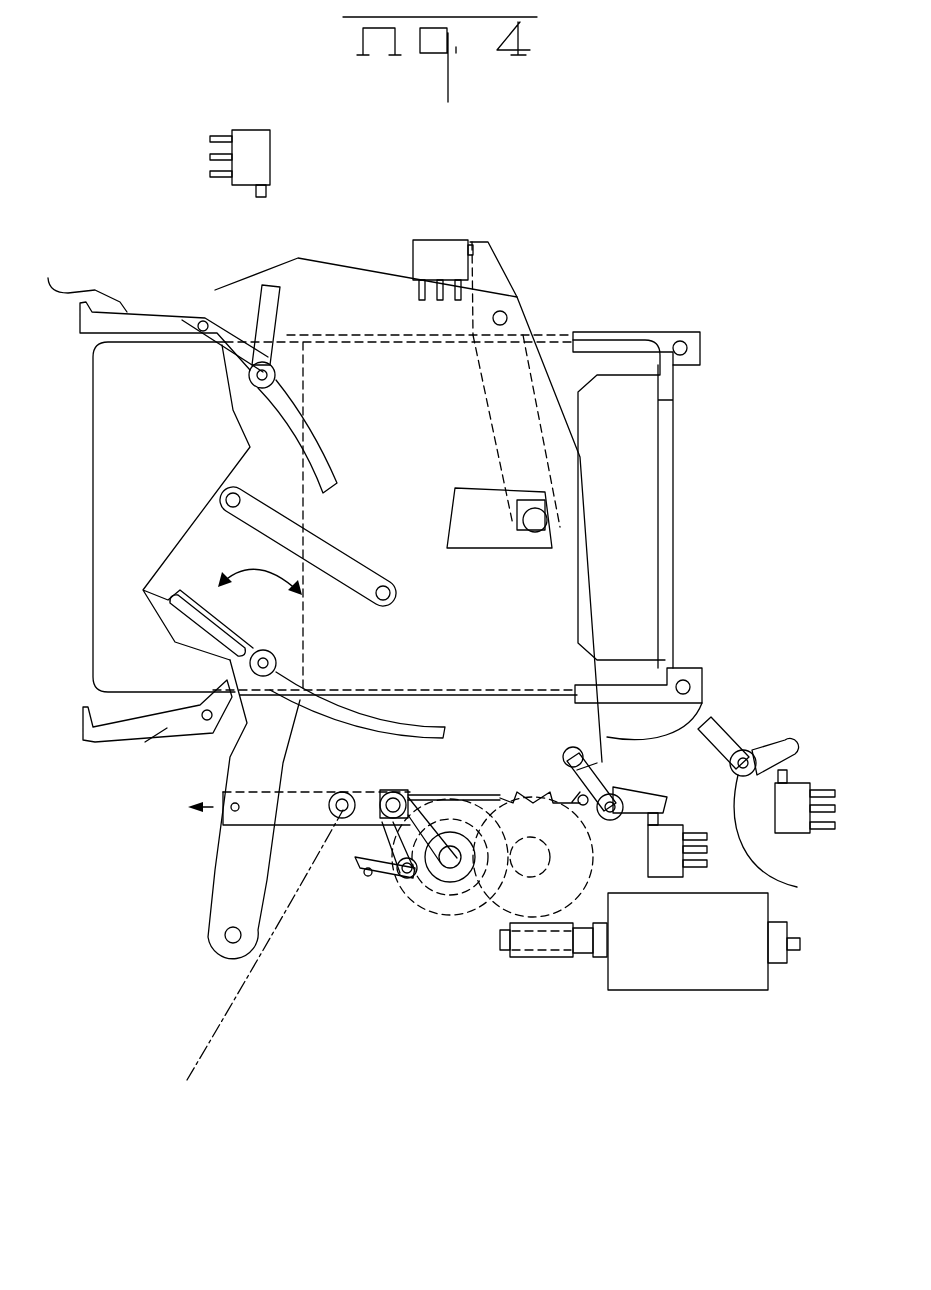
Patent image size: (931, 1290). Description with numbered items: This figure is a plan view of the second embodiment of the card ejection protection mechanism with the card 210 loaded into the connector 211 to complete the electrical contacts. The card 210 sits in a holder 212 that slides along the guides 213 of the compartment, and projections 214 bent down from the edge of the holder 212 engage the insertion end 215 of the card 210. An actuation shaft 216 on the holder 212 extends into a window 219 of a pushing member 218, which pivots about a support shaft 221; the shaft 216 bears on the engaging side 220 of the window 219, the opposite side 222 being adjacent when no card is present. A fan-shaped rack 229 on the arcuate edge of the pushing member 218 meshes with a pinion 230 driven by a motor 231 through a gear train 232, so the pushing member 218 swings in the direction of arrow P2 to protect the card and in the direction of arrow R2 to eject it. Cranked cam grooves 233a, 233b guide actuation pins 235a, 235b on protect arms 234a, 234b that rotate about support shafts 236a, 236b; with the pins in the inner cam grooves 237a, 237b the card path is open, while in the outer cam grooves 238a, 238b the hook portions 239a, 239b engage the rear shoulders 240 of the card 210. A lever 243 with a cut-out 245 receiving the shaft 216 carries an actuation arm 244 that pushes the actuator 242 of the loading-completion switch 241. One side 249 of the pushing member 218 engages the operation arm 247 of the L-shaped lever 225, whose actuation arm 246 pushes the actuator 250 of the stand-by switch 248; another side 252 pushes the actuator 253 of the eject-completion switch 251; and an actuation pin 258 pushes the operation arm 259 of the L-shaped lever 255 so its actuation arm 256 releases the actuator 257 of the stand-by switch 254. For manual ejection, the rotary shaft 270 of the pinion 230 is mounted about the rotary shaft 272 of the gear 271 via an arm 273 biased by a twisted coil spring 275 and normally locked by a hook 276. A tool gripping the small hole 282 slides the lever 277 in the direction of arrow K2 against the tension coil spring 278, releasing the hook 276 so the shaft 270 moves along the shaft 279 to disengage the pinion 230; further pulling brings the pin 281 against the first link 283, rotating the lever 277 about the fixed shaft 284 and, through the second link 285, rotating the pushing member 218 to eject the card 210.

The card 210 is at (90, 522).
The connector 211 is at (677, 482).
The holder 212 is at (548, 352).
The guides 213 is at (383, 333).
The projections 214 is at (690, 352).
The insertion end 215 is at (675, 400).
The actuation shaft 216 is at (537, 530).
The pushing member 218 is at (363, 285).
The window 219 is at (543, 560).
The engaging side 220 is at (588, 533).
The support shaft 221 is at (505, 312).
The opposite side 222 is at (457, 488).
The L-shaped lever 225 is at (793, 844).
The fan-shaped rack 229 is at (240, 700).
The pinion 230 is at (239, 965).
The motor 231 is at (742, 970).
The gear train 232 is at (480, 903).
The cam groove 233a is at (207, 647).
The cam groove 233b is at (217, 290).
The protect arm 234a is at (145, 742).
The protect arm 234b is at (48, 278).
The actuation pin 235a is at (182, 573).
The actuation pin 235b is at (257, 378).
The support shaft 236a is at (207, 717).
The support shaft 236b is at (197, 328).
The inner cam groove 237a is at (420, 725).
The inner cam groove 237b is at (248, 410).
The outer cam groove 238a is at (147, 618).
The outer cam groove 238b is at (222, 287).
The hook portion 239a is at (83, 735).
The hook portion 239b is at (83, 300).
The rear shoulders 240 is at (90, 352).
The switch 241 is at (443, 252).
The actuator 242 is at (472, 240).
The lever 243 is at (533, 380).
The actuation arm 244 is at (492, 245).
The cut-out 245 is at (517, 508).
The actuation arm 246 is at (790, 750).
The operation arm 247 is at (725, 727).
The switch 248 is at (797, 825).
The side of pushing member 249 is at (703, 698).
The actuator 250 is at (790, 775).
The switch 251 is at (252, 135).
The side of pushing member 252 is at (248, 275).
The actuator 253 is at (268, 192).
The switch 254 is at (663, 868).
The L-shaped lever 255 is at (612, 820).
The actuation arm 256 is at (660, 812).
The actuator 257 is at (680, 873).
The actuation pin 258 is at (566, 750).
The operation arm 259 is at (607, 783).
The rotary shaft 270 is at (322, 860).
The gear 271 is at (448, 883).
The rotary shaft 272 is at (455, 870).
The arm 273 is at (398, 875).
The twisted coil spring 275 is at (380, 877).
The hook 276 is at (300, 877).
The lever 277 is at (222, 912).
The tension coil spring 278 is at (565, 925).
The shaft 279 is at (345, 862).
The pin 281 is at (227, 812).
The small hole 282 is at (200, 845).
The first link 283 is at (230, 942).
The fixed shaft 284 is at (222, 950).
The second link 285 is at (217, 528).
The arrow P2 is at (260, 565).
The arrow R2 is at (284, 628).
The arrow K2 is at (183, 807).